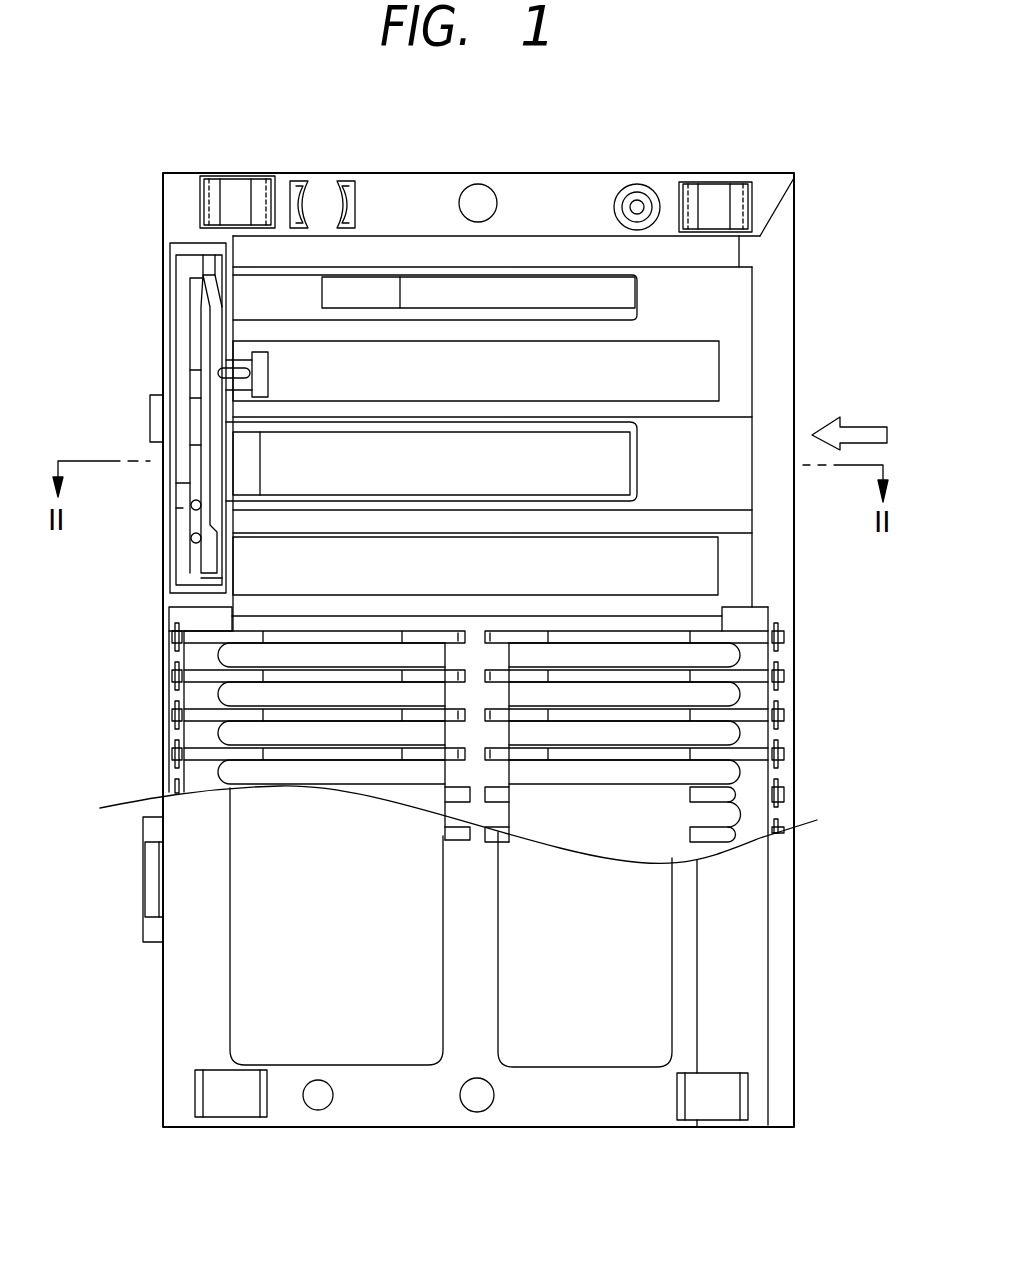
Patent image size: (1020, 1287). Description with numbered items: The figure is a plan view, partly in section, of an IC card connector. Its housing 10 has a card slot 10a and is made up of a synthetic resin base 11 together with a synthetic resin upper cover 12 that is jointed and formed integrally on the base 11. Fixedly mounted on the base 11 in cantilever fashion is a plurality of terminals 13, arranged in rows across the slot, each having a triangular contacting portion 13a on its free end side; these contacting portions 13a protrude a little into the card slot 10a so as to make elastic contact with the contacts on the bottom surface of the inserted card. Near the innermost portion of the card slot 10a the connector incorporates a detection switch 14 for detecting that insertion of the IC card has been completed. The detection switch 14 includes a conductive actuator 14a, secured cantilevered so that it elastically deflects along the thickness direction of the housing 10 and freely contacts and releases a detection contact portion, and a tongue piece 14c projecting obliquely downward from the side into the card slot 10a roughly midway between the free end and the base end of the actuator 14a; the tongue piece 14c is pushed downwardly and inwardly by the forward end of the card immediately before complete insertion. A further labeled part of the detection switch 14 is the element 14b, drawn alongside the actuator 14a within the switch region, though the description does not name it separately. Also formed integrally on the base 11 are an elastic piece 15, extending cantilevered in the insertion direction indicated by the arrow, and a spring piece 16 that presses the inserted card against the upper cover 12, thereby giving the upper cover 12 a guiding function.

The housing 10 is at (878, 602).
The card slot 10a is at (780, 271).
The base 11 is at (787, 580).
The upper cover 12 is at (758, 920).
The terminals 13 is at (203, 641).
The contacting portion 13a is at (523, 640).
The detection switch 14 is at (177, 323).
The actuator 14a is at (212, 258).
The slider body 14b is at (182, 298).
The tongue piece 14c is at (268, 371).
The elastic piece 15 is at (243, 453).
The spring piece 16 is at (433, 275).